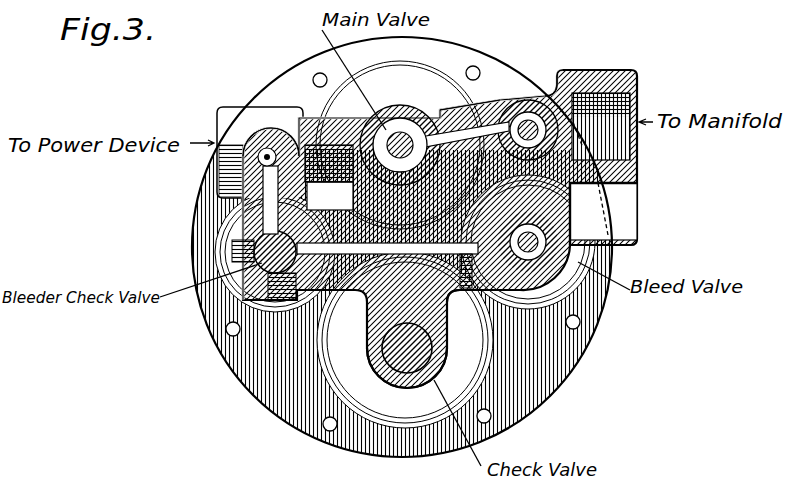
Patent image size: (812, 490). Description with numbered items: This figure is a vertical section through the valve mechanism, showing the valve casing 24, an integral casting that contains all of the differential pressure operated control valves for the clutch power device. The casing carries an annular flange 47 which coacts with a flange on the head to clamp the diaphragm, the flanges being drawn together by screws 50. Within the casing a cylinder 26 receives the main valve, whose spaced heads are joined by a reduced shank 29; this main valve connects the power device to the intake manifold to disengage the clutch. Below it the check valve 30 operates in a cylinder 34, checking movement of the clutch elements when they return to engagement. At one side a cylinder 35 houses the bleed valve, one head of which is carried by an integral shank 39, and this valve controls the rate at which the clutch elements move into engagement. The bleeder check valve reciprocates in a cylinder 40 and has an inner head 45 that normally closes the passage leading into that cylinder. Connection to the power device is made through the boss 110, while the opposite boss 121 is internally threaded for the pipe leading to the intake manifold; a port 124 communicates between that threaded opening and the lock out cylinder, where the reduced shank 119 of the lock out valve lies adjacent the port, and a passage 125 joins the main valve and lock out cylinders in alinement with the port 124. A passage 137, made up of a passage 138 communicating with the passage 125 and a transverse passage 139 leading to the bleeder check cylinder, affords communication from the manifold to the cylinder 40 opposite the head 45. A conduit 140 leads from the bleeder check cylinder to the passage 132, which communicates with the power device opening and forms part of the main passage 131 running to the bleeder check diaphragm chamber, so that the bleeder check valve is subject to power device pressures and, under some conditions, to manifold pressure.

The annular flange 47 is at (453, 46).
The boss 110 is at (215, 111).
The passage 131 is at (261, 154).
The passage 132 is at (277, 160).
The conduit 140 is at (283, 172).
The cylinder 26 is at (367, 128).
The passage 137 is at (354, 210).
The reduced shank 29 is at (399, 140).
The passage 125 is at (437, 128).
The valve casing 24 is at (496, 100).
The reduced shank 119 is at (533, 120).
The port 124 is at (557, 82).
The boss 121 is at (633, 77).
The passage 138 is at (563, 203).
The cylinder 35 is at (540, 228).
The integral shank 39 is at (546, 244).
The inner head 45 is at (256, 252).
The cylinder 40 is at (258, 272).
The screws 50 is at (581, 322).
The check valve 30 is at (393, 348).
The cylinder 34 is at (386, 372).
The transverse passage 139 is at (459, 298).